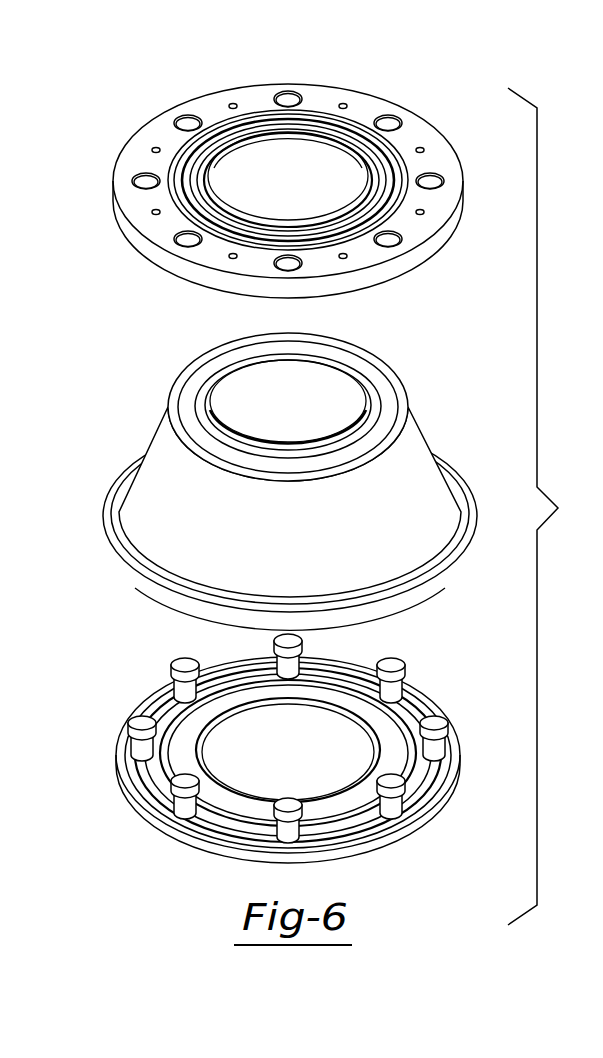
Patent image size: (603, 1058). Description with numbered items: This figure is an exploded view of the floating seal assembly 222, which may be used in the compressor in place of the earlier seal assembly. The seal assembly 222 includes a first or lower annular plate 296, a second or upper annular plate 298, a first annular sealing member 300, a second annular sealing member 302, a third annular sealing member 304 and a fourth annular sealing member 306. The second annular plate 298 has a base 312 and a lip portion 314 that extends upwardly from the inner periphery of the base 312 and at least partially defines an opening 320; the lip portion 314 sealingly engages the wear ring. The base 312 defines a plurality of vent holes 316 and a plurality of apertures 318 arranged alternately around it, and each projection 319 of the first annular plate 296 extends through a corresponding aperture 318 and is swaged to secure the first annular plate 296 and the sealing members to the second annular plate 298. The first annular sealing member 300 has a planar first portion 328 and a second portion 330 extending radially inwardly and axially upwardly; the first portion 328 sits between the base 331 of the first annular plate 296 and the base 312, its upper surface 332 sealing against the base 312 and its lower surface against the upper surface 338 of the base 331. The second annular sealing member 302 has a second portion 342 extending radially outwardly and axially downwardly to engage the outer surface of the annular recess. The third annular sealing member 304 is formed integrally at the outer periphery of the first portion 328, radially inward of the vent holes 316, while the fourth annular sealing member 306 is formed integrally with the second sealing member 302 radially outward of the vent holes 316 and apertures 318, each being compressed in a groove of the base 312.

The seal assembly 222 is at (263, 168).
The second annular plate 298 is at (444, 120).
The base 312 is at (193, 103).
The lip portion 314 is at (247, 127).
The opening 320 is at (230, 167).
The apertures 318 is at (137, 181).
The vent holes 316 is at (153, 212).
The first annular sealing member 300 is at (300, 468).
The third annular sealing member 304 is at (298, 340).
The first portion 328 is at (367, 370).
The second portion 330 is at (362, 393).
The upper surface 332 is at (187, 407).
The fourth annular sealing member 306 is at (429, 446).
The second annular sealing member 302 is at (315, 525).
The second portion 342 is at (425, 567).
The first annular plate 296 is at (283, 762).
The base 331 is at (426, 702).
The upper surface 338 is at (440, 750).
The projections 319 is at (147, 752).